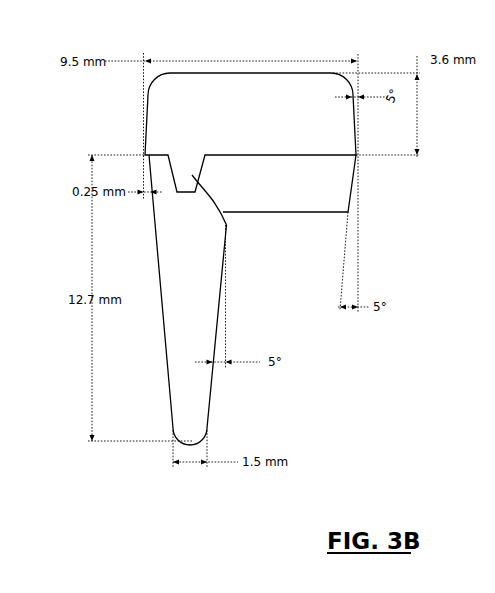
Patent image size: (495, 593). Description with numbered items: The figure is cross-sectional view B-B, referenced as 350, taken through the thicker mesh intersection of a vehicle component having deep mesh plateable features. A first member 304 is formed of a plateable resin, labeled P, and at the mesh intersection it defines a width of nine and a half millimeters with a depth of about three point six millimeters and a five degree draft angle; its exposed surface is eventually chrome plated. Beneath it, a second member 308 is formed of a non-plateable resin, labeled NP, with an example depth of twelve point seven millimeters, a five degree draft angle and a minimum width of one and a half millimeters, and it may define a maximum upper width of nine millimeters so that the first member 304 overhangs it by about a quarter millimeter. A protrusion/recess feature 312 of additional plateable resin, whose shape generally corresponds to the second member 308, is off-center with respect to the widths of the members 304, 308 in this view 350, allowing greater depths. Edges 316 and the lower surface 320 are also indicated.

The first member 304 is at (226, 74).
The second member 308 is at (163, 310).
The protrusion/recess feature 312 is at (227, 226).
The edge 316 is at (357, 157).
The lower surface of P portion 320 is at (297, 213).
The cross-sectional view B-B 350 is at (382, 477).